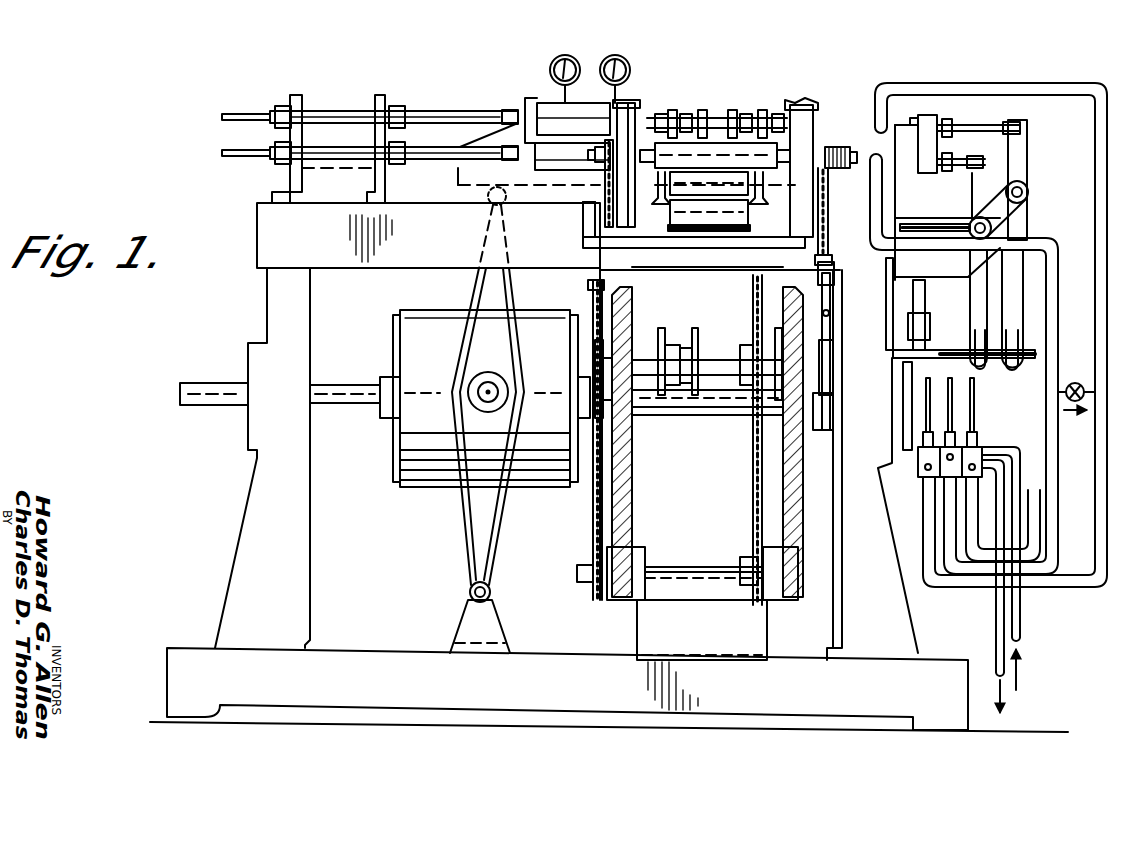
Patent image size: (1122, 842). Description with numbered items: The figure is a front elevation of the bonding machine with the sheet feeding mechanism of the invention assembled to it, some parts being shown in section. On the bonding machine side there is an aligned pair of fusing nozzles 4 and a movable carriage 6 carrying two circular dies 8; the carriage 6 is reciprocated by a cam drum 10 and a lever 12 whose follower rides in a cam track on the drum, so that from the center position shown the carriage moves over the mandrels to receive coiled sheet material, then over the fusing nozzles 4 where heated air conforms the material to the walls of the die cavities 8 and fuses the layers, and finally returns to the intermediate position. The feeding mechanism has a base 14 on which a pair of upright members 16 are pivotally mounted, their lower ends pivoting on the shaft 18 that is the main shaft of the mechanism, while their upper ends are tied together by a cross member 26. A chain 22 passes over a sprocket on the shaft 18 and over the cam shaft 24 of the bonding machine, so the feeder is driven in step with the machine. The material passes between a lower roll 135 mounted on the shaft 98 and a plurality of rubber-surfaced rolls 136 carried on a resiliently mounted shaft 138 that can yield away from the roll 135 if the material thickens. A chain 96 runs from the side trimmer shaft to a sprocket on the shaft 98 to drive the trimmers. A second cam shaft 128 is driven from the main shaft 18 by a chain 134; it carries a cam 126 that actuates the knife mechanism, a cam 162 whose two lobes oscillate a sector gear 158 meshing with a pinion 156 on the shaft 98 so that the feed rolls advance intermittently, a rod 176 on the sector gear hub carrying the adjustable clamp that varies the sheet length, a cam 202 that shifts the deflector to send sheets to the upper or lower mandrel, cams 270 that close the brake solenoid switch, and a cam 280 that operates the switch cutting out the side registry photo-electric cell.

The fusing nozzles 4 is at (455, 140).
The movable carriage 6 is at (586, 100).
The circular dies 8 is at (556, 110).
The cam drum 10 is at (418, 482).
The lever 12 is at (465, 545).
The base 14 is at (637, 622).
The upright members 16 is at (632, 508).
The shaft 18 is at (689, 570).
The chain 22 is at (592, 517).
The cam shaft 24 is at (348, 405).
The cross member 26 is at (707, 260).
The chain 96 is at (606, 180).
The shaft 98 is at (596, 157).
The cam 126 is at (661, 328).
The cam shaft 128 is at (718, 358).
The chain 134 is at (753, 466).
The lower roll 135 is at (746, 148).
The rolls 136 is at (705, 132).
The shaft 138 is at (690, 130).
The pinion 156 is at (822, 148).
The sector gear 158 is at (826, 206).
The cam 162 is at (833, 337).
The rod 176 is at (832, 300).
The cam 202 is at (777, 328).
The cams 270 is at (598, 338).
The cam 280 is at (694, 398).